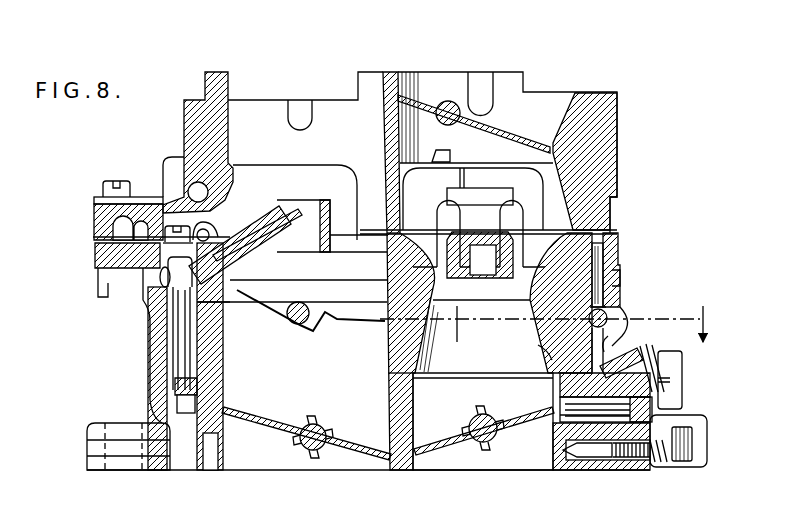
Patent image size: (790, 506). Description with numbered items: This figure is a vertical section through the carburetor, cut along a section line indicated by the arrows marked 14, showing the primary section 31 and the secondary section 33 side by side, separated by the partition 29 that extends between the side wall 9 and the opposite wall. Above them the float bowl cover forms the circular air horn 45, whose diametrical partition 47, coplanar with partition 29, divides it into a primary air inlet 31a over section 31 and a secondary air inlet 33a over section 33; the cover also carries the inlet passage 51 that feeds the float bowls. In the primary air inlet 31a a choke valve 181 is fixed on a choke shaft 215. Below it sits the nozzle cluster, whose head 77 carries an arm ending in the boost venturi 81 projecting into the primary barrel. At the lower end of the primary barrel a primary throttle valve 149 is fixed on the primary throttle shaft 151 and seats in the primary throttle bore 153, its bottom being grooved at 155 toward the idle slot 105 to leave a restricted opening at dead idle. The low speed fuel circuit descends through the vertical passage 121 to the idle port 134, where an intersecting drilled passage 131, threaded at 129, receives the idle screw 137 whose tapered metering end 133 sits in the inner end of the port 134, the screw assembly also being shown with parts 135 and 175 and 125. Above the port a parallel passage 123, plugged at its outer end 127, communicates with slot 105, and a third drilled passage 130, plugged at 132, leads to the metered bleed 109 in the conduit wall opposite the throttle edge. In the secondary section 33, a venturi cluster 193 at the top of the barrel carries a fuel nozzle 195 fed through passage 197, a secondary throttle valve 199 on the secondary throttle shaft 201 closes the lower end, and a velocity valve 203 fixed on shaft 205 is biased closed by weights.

The side wall 9 is at (614, 279).
The section line 14- 14 is at (556, 330).
The partition 29 is at (394, 375).
The primary section 31 is at (448, 472).
The primary air inlet 31a is at (509, 90).
The secondary section 33 is at (262, 471).
The secondary air inlet 33a is at (267, 105).
The air horn 45 is at (214, 82).
The diametrical partition 47 is at (392, 78).
The inlet passage 51 is at (190, 188).
The head 77 is at (480, 180).
The boost venturi 81 is at (478, 240).
The slot 105 is at (558, 400).
The metered bleed 109 is at (548, 375).
The vertical passage 121 is at (546, 334).
The parallel passage 123 is at (650, 362).
The fuel inlet passage 125 is at (600, 262).
The outer end plug 127 is at (683, 388).
The thread 129 is at (623, 462).
The third drilled passage 130 is at (548, 358).
The intersecting drilled passage 131 is at (655, 465).
The plug 132 is at (608, 356).
The tapered metering end 133 is at (577, 462).
The idle port 134 is at (556, 446).
The idle screw head 135 is at (683, 427).
The idle screw 137 is at (707, 455).
The primary throttle valve 149 is at (442, 441).
The primary throttle shaft 151 is at (471, 450).
The primary throttle bore 153 is at (414, 401).
The groove 155 is at (558, 418).
The inlet check ball 175 is at (608, 312).
The choke valve 181 is at (504, 128).
The venturi cluster 193 is at (276, 211).
The fuel nozzle 195 is at (290, 213).
The passage 197 is at (178, 388).
The secondary throttle valve 199 is at (256, 425).
The secondary throttle shaft 201 is at (323, 428).
The velocity valve 203 is at (346, 326).
The velocity valve shaft 205 is at (296, 326).
The choke shaft 215 is at (439, 122).